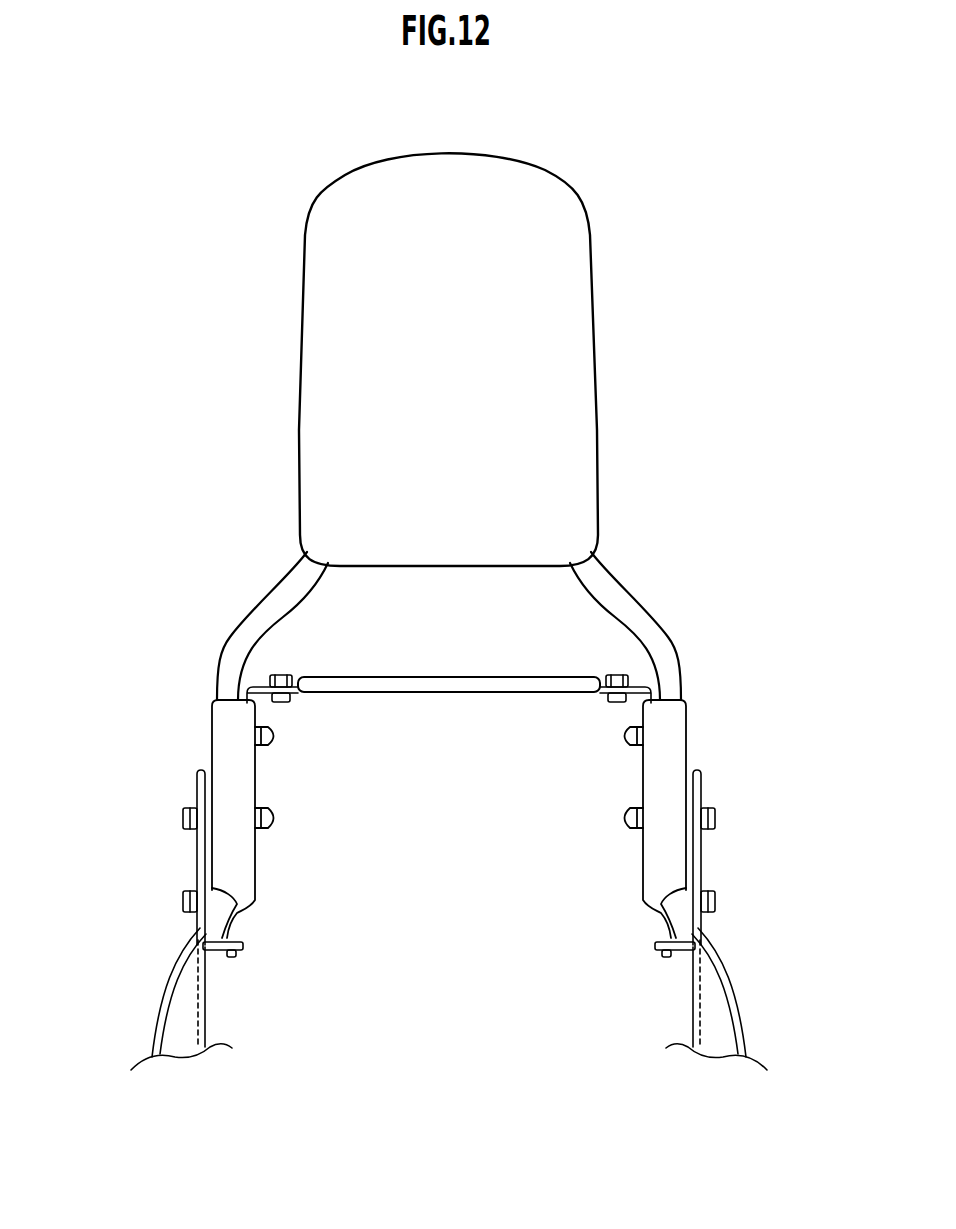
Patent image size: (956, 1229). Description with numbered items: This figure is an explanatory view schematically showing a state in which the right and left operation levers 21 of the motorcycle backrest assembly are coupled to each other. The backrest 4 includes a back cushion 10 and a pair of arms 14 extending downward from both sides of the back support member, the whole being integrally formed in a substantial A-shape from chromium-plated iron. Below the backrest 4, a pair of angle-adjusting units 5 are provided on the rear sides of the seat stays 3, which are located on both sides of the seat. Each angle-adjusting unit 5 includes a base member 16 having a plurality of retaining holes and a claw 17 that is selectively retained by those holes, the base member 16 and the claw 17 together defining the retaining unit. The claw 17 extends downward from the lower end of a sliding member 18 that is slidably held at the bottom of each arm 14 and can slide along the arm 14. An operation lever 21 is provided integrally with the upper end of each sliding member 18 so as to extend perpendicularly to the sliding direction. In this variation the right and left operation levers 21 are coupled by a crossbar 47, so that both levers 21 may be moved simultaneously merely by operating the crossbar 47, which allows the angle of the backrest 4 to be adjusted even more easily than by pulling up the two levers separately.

The seat stay 3 is at (165, 978).
The backrest 4 is at (672, 406).
The angle-adjusting unit 5 is at (186, 734).
The back cushion 10 is at (543, 203).
The arm 14 is at (232, 632).
The base member 16 is at (200, 878).
The claw 17 is at (236, 928).
The sliding member 18 is at (256, 776).
The operation lever 21 is at (297, 703).
The crossbar 47 is at (420, 700).